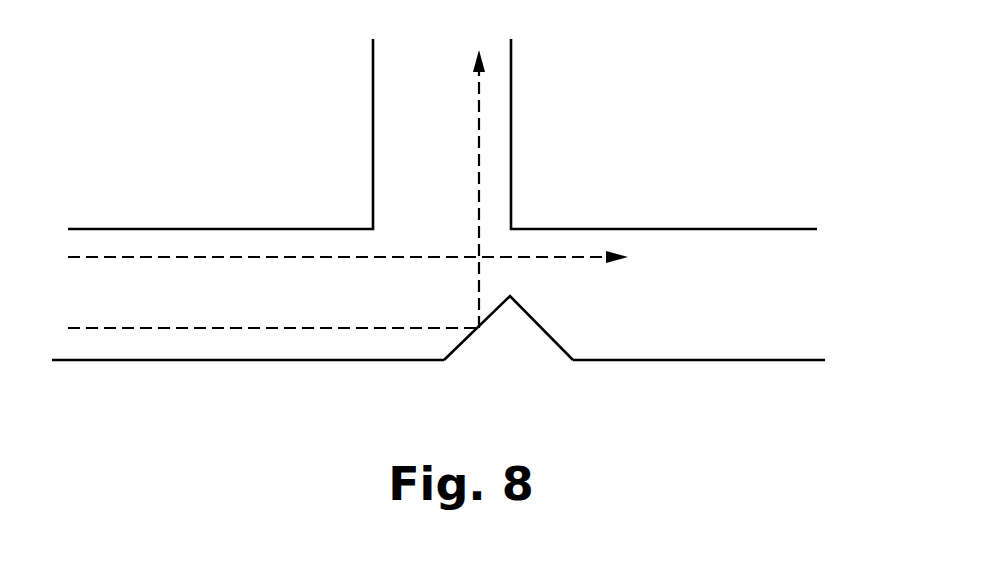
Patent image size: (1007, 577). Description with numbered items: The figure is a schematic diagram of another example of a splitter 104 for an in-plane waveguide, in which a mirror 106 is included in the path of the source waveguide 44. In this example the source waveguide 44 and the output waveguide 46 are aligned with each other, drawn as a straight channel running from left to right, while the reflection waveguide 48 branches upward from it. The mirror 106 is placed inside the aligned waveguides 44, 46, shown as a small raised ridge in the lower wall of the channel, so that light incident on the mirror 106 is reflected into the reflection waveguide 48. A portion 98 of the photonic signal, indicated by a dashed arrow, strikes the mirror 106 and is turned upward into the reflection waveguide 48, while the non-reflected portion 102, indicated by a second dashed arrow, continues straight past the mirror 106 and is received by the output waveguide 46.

The source waveguide 44 is at (225, 363).
The output waveguide 46 is at (643, 215).
The reflection waveguide 48 is at (373, 126).
The portion of the photonic signal 98 is at (479, 144).
The non-reflected portion 102 is at (229, 257).
The splitter 104 is at (668, 112).
The mirror 106 is at (476, 347).